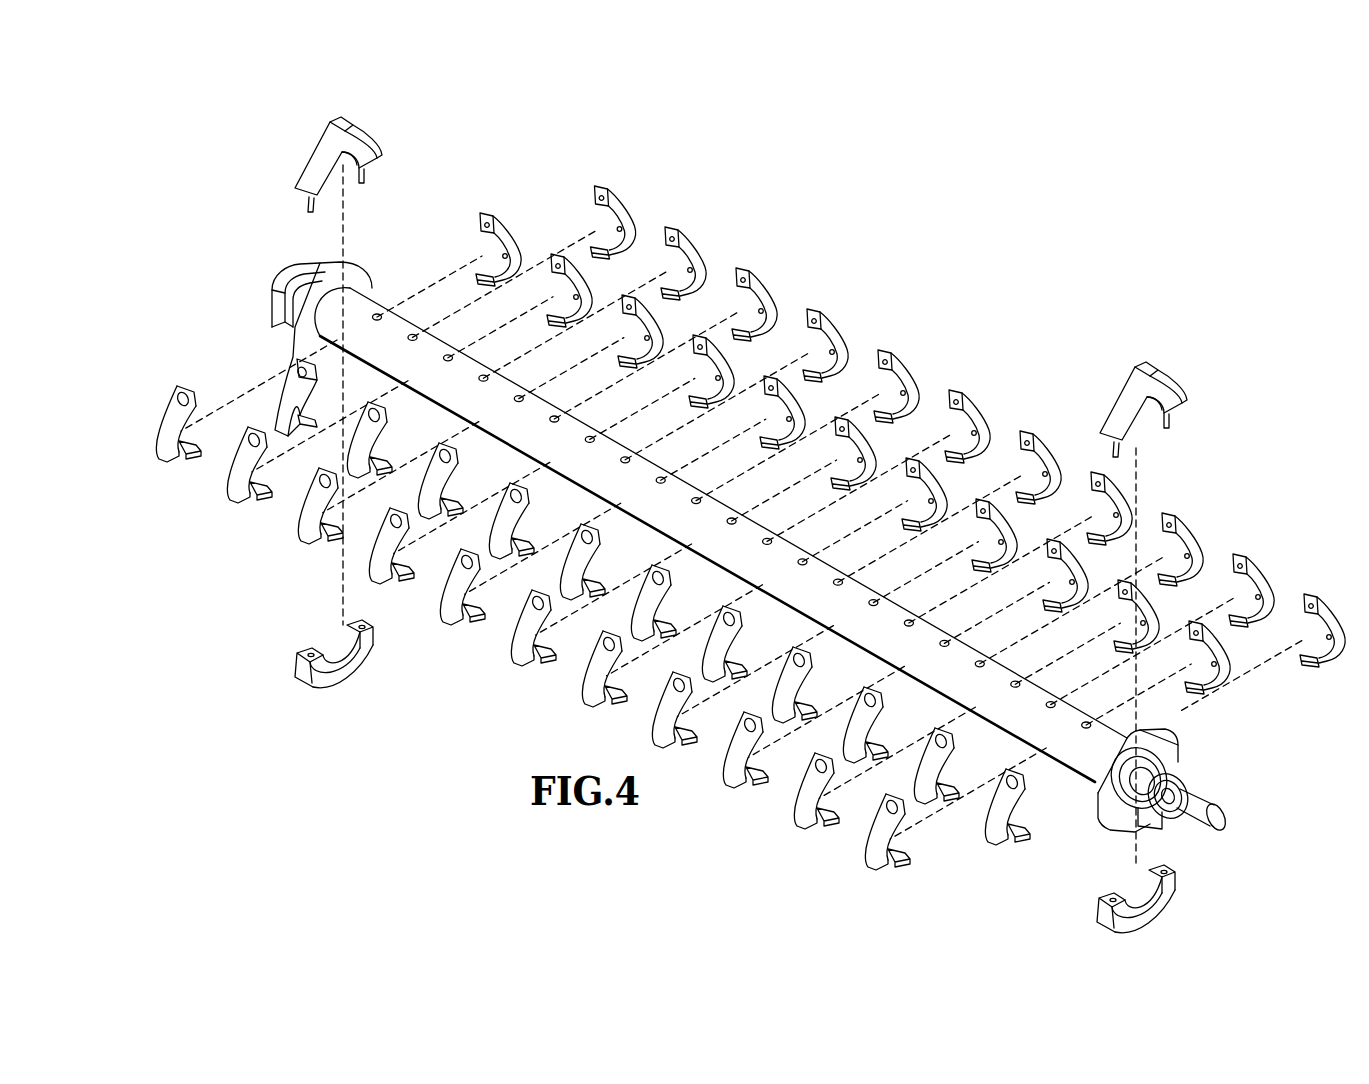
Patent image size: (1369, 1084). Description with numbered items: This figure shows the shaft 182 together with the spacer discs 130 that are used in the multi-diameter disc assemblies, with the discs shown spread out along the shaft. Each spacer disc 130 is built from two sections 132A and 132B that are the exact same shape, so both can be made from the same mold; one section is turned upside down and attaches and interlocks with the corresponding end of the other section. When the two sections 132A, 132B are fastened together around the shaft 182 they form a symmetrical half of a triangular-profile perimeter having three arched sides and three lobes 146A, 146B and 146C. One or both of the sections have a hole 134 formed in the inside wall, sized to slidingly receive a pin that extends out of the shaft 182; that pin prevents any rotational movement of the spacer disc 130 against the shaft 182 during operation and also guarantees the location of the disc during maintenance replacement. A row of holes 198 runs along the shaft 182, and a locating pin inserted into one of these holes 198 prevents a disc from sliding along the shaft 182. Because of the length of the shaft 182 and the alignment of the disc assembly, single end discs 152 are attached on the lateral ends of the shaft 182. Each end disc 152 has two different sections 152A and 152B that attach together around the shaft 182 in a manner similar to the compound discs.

The spacer disc 130 is at (487, 170).
The section 132A is at (555, 628).
The section 132B is at (730, 394).
The hole 134 is at (701, 262).
The lobe 146A is at (476, 224).
The lobe 146B is at (176, 456).
The lobe 146C is at (520, 268).
The end disc 152 is at (733, 518).
The section 152A is at (295, 667).
The section 152B is at (353, 120).
The shaft 182 is at (1080, 786).
The holes 198 is at (413, 334).